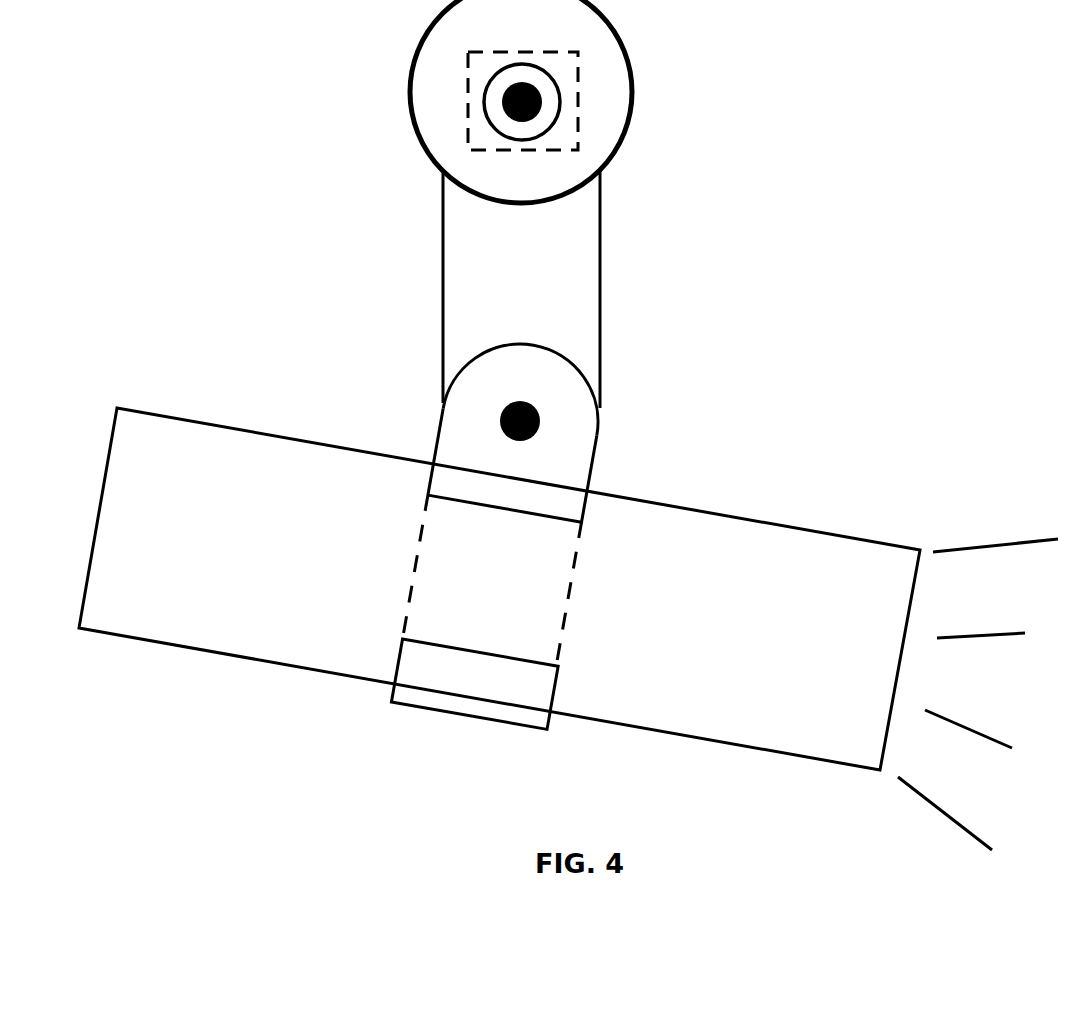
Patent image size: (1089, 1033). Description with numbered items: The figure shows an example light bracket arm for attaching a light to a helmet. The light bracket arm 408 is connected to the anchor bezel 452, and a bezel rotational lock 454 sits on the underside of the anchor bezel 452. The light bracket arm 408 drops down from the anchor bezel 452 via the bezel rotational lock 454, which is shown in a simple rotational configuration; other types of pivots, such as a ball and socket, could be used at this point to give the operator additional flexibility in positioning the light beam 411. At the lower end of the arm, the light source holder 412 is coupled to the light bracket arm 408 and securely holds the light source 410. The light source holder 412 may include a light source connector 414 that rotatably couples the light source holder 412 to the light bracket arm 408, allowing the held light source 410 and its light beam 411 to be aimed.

The light bracket arm 408 is at (480, 284).
The light source 410 is at (783, 493).
The light beam 411 is at (1050, 512).
The light source holder 412 is at (606, 458).
The light source connector 414 is at (541, 404).
The anchor bezel 452 is at (409, 90).
The bezel rotational lock 454 is at (463, 137).